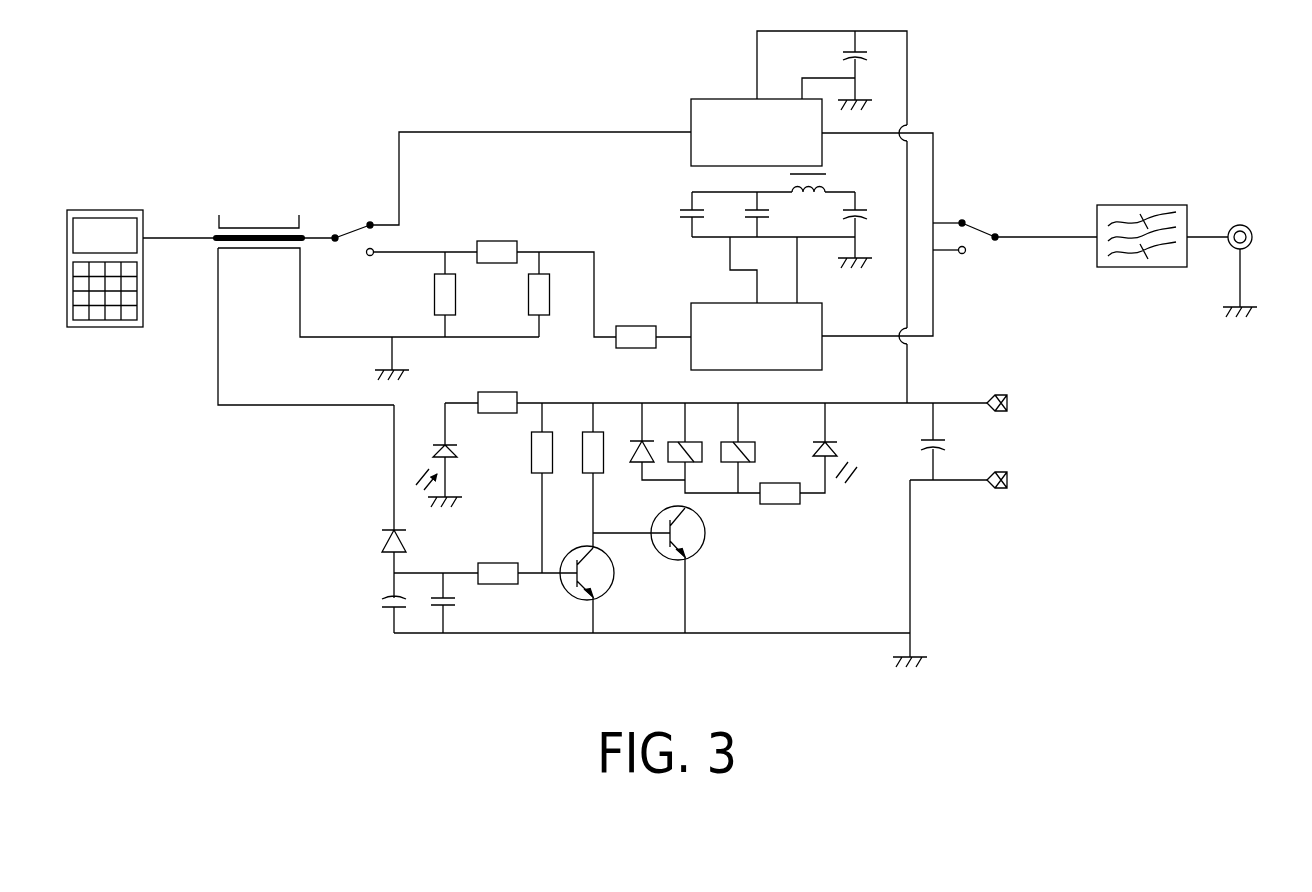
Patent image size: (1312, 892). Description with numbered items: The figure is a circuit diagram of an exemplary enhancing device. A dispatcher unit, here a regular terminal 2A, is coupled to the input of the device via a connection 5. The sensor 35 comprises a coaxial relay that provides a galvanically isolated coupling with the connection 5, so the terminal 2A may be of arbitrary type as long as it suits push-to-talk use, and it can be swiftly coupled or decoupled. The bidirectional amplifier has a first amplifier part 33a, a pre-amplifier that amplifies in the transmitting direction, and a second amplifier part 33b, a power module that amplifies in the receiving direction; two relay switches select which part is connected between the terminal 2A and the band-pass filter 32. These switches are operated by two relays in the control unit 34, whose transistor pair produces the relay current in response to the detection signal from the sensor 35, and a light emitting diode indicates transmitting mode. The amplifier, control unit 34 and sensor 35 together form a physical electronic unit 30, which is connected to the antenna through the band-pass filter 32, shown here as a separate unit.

The terminal 2A is at (105, 328).
The connection 5 is at (181, 213).
The sensor 35 is at (256, 210).
The first amplifier part 33a is at (718, 97).
The second amplifier part 33b is at (797, 370).
The band-pass filter 32 is at (1144, 205).
The control unit 34 is at (777, 672).
The electronic unit 30 is at (1154, 604).